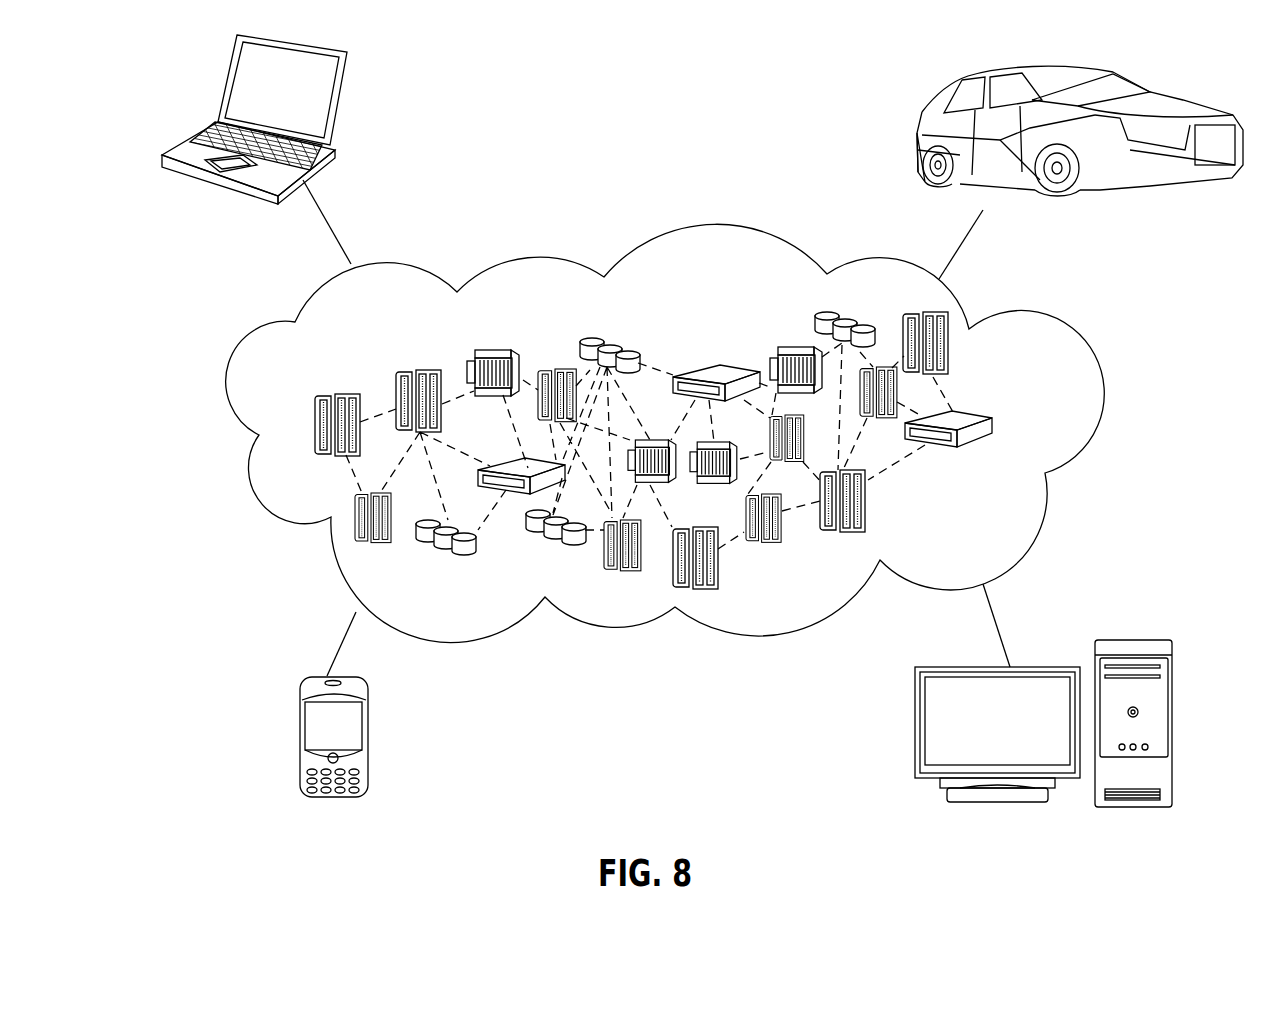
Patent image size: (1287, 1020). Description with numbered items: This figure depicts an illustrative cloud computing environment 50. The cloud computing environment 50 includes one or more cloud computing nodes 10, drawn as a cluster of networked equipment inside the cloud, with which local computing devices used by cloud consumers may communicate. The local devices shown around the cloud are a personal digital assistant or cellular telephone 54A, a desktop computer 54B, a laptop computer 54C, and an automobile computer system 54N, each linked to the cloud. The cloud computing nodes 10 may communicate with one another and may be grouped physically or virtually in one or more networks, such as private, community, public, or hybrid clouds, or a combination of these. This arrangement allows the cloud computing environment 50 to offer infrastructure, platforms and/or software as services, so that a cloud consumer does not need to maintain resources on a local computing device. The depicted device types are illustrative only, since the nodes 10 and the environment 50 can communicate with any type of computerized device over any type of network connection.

The cloud computing environment 50 is at (1057, 340).
The cloud computing node 10 is at (1033, 444).
The personal digital assistant or cellular telephone 54A is at (300, 742).
The desktop computer 54B is at (1135, 640).
The laptop computer 54C is at (338, 105).
The automobile computer system 54N is at (925, 115).